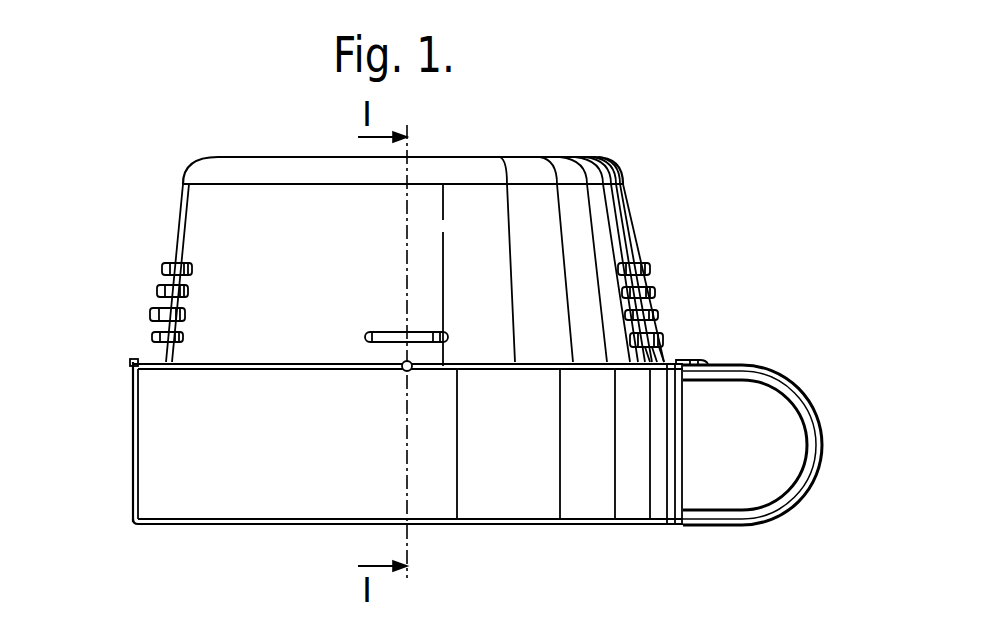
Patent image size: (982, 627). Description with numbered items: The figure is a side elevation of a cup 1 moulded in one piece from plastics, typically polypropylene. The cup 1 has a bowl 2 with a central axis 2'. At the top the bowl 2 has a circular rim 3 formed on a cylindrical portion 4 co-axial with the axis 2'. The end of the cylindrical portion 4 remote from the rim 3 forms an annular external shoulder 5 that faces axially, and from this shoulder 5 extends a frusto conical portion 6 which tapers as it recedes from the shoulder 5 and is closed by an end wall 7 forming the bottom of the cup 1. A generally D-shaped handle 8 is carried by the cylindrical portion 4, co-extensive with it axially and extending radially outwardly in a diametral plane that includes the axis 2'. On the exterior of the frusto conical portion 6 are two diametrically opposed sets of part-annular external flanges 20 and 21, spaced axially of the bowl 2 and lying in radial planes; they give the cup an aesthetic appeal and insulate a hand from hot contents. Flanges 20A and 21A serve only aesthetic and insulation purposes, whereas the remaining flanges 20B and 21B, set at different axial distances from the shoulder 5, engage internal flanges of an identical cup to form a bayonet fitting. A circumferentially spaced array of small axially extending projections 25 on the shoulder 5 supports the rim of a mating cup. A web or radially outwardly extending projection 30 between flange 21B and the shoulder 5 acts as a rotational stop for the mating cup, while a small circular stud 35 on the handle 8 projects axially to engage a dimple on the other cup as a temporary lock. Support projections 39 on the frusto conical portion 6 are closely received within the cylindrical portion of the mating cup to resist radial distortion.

The cup 1 is at (160, 154).
The bowl 2 is at (374, 455).
The central axis 2' is at (437, 341).
The circular rim 3 is at (278, 526).
The cylindrical portion 4 is at (130, 478).
The annular external shoulder 5 is at (520, 367).
The frusto conical portion 6 is at (256, 192).
The end wall 7 is at (484, 160).
The D-shaped handle 8 is at (792, 500).
The set of external flanges 20 is at (150, 258).
The external flanges 20A is at (160, 270).
The external flange 20B is at (150, 317).
The set of external flanges 21 is at (663, 240).
The external flanges 21A is at (655, 293).
The external flange 21B is at (658, 315).
The axially extending projections 25 is at (131, 360).
The radially outwardly extending projection 30 is at (664, 352).
The circular stud 35 is at (706, 357).
The support projections 39 is at (372, 334).